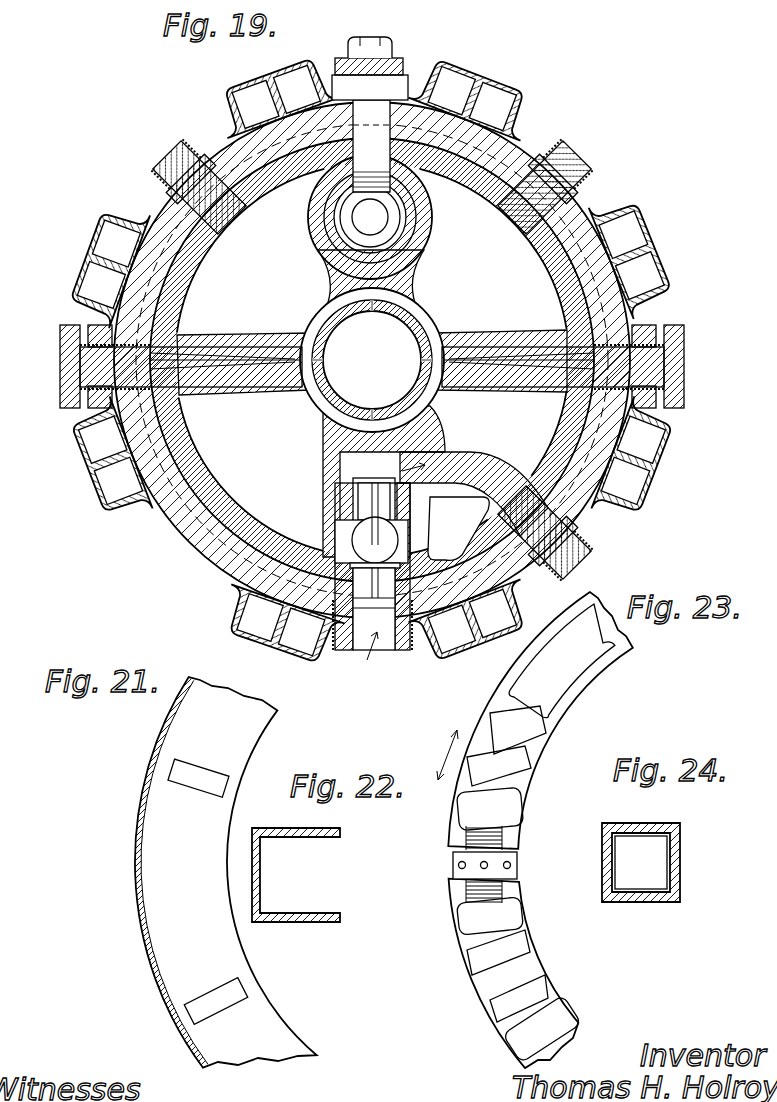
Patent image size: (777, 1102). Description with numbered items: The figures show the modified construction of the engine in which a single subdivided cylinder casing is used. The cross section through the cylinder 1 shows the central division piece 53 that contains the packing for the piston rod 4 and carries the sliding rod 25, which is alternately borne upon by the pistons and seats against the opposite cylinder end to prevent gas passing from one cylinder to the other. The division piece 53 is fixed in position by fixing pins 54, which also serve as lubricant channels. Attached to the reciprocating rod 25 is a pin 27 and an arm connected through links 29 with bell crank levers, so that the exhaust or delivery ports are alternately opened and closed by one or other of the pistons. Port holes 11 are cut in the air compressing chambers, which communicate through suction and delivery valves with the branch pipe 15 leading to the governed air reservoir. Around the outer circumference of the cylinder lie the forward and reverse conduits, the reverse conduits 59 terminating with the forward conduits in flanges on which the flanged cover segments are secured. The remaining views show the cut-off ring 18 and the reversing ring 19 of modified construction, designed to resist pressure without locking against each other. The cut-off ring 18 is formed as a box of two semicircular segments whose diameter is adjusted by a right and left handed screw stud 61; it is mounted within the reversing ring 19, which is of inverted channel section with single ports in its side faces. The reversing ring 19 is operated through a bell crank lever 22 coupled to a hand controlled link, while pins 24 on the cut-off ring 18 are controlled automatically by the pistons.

In FIG. 19, the cylinder 1 is at (185, 534).
In FIG. 19, the piston rod 4 is at (372, 360).
In FIG. 19, the port holes 11 is at (360, 543).
In FIG. 19, the branch pipe 15 is at (498, 518).
In FIG. 23, the cut-off ring 18 is at (523, 798).
In FIG. 24, the cut-off ring 18 is at (680, 826).
In FIG. 21, the reversing ring 19 is at (226, 872).
In FIG. 22, the reversing ring 19 is at (262, 872).
In FIG. 21, the bell crank lever 22 is at (170, 768).
In FIG. 23, the pins 24 is at (520, 953).
In FIG. 19, the sliding rod 25 is at (377, 223).
In FIG. 19, the pin 27 is at (371, 146).
In FIG. 19, the links 29 is at (386, 54).
In FIG. 19, the central division piece 53 is at (173, 279).
In FIG. 19, the fixing pins 54 is at (66, 395).
In FIG. 19, the reverse conduits 59 is at (468, 108).
In FIG. 23, the right and left handed screw stud 61 is at (508, 872).